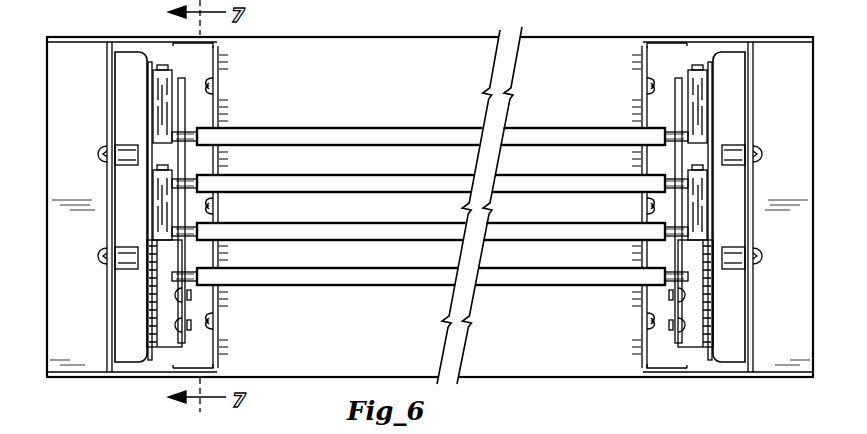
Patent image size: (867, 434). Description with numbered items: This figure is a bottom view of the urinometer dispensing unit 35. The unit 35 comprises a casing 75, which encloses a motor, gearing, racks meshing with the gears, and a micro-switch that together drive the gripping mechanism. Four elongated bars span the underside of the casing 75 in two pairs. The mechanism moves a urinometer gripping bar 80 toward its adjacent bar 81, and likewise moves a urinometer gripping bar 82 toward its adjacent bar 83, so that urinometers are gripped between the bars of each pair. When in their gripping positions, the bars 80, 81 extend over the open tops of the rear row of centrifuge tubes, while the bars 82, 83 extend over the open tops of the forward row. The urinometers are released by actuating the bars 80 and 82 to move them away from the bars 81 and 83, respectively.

The urinometer dispensing unit 35 is at (380, 29).
The casing 75 is at (88, 378).
The urinometer gripping bar 80 is at (329, 137).
The adjacent bar 81 is at (377, 183).
The urinometer gripping bar 82 is at (310, 232).
The adjacent bar 83 is at (327, 285).